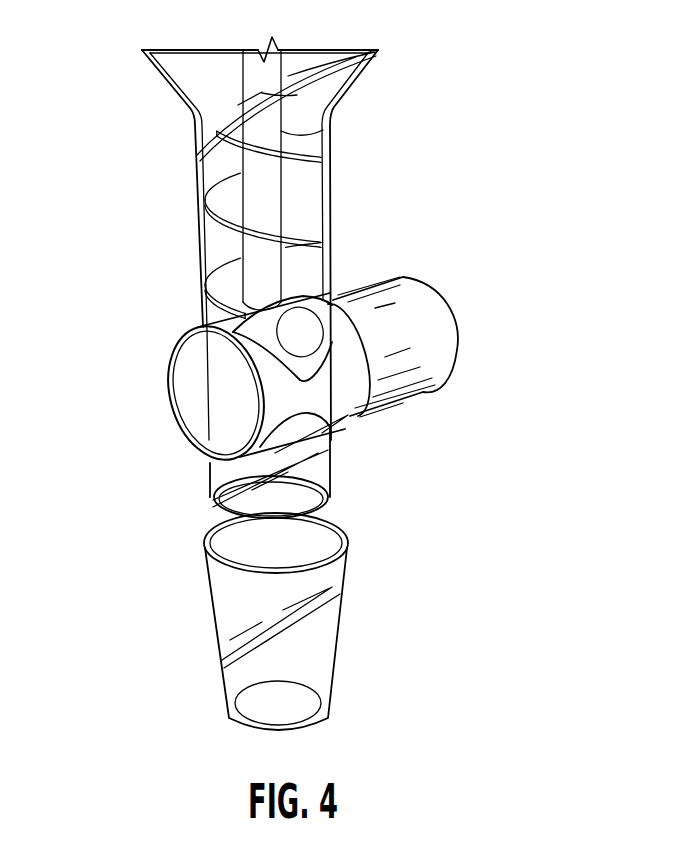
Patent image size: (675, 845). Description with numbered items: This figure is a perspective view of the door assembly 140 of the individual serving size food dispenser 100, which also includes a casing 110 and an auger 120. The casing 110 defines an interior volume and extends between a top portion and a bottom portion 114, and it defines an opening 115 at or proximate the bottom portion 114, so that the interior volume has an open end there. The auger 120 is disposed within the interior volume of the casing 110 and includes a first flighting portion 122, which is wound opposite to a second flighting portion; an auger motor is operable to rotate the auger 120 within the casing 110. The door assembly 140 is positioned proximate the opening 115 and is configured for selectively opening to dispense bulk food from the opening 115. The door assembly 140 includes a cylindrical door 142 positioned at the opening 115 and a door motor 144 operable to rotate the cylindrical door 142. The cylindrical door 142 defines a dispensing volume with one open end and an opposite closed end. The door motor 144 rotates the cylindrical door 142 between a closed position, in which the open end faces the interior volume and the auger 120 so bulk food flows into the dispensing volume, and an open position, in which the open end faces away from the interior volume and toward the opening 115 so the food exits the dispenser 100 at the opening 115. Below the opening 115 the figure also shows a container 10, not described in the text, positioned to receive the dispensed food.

The food dispenser 100 is at (100, 82).
The casing 110 is at (197, 160).
The auger 120 is at (308, 137).
The first flighting portion 122 is at (305, 239).
The door assembly 140 is at (164, 352).
The cylindrical door 142 is at (202, 405).
The door motor 144 is at (400, 383).
The bottom portion 114 is at (200, 478).
The opening 115 is at (311, 524).
The cup 10 is at (210, 641).